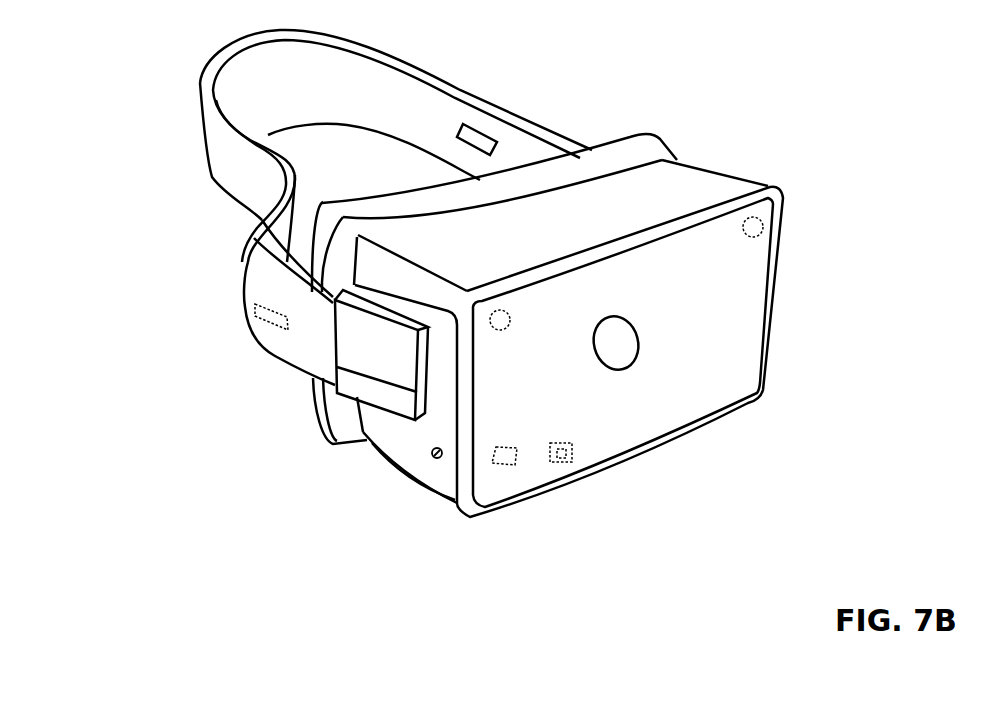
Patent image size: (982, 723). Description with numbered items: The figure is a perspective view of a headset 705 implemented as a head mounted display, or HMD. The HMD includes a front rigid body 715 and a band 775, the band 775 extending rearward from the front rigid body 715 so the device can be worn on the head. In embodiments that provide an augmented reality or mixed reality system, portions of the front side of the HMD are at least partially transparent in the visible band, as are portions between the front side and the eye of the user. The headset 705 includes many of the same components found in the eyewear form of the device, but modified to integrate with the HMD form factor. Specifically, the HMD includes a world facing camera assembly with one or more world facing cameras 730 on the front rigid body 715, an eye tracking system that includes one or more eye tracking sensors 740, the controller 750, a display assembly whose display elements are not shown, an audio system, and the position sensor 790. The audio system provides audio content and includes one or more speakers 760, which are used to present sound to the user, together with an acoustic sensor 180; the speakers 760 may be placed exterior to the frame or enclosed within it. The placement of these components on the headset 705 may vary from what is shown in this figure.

The headset 705 is at (97, 76).
The band 775 is at (497, 100).
The front rigid body 715 is at (685, 178).
The eye tracking sensor 740 is at (763, 227).
The world facing camera 730 is at (633, 357).
The position sensor 790 is at (572, 452).
The controller 750 is at (493, 463).
The acoustic sensor 180 is at (430, 453).
The speaker 760 is at (263, 320).